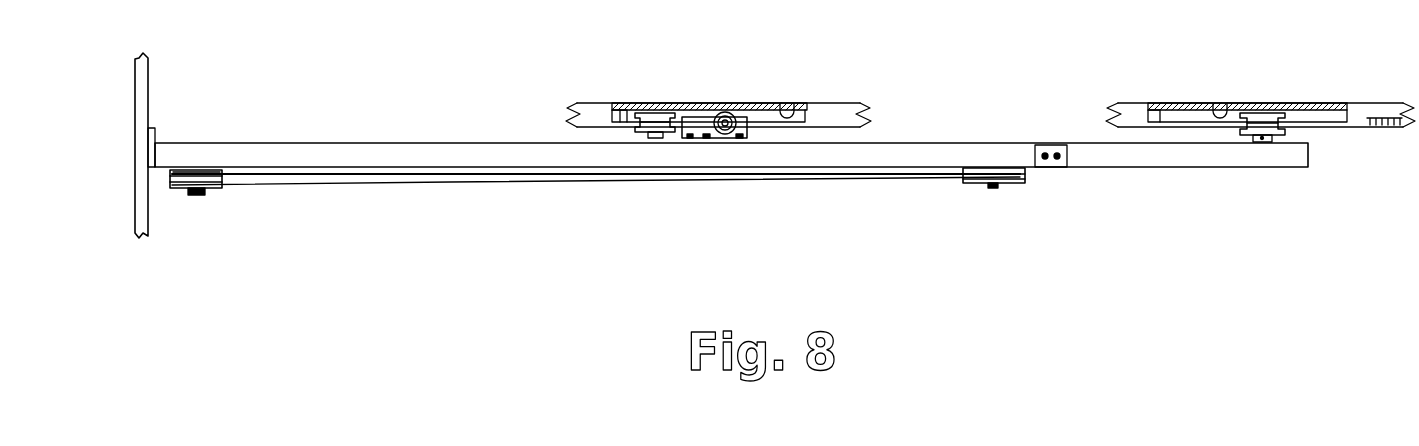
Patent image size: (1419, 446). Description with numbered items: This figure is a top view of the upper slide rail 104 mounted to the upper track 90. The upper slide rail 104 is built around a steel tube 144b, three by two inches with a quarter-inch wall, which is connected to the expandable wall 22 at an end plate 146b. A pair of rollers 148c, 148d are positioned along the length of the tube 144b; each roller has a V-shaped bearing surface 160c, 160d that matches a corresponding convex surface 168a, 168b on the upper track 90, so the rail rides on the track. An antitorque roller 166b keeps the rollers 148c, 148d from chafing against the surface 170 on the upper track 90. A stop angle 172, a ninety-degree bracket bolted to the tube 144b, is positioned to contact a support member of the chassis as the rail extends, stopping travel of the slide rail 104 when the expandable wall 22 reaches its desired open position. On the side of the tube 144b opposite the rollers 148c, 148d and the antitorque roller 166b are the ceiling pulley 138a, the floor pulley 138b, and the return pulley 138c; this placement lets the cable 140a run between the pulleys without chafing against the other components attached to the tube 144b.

The expandable wall 22 is at (148, 62).
The end plate 146b is at (152, 128).
The steel tube 144b is at (385, 143).
The cable 140a is at (373, 185).
The ceiling pulley 138a is at (212, 188).
The floor pulley 138b is at (212, 170).
The return pulley 138c is at (966, 183).
The stop angle 172 is at (1068, 150).
The upper slide rail 104 is at (527, 193).
The upper track 90 is at (593, 102).
The roller 148c is at (676, 103).
The roller 148d is at (1270, 103).
The convex surface 168a is at (620, 107).
The convex surface 168b is at (1365, 127).
The surface 170 is at (783, 108).
The V-shaped bearing surface 160c is at (638, 128).
The V-shaped bearing surface 160d is at (1243, 128).
The antitorque roller 166b is at (747, 128).